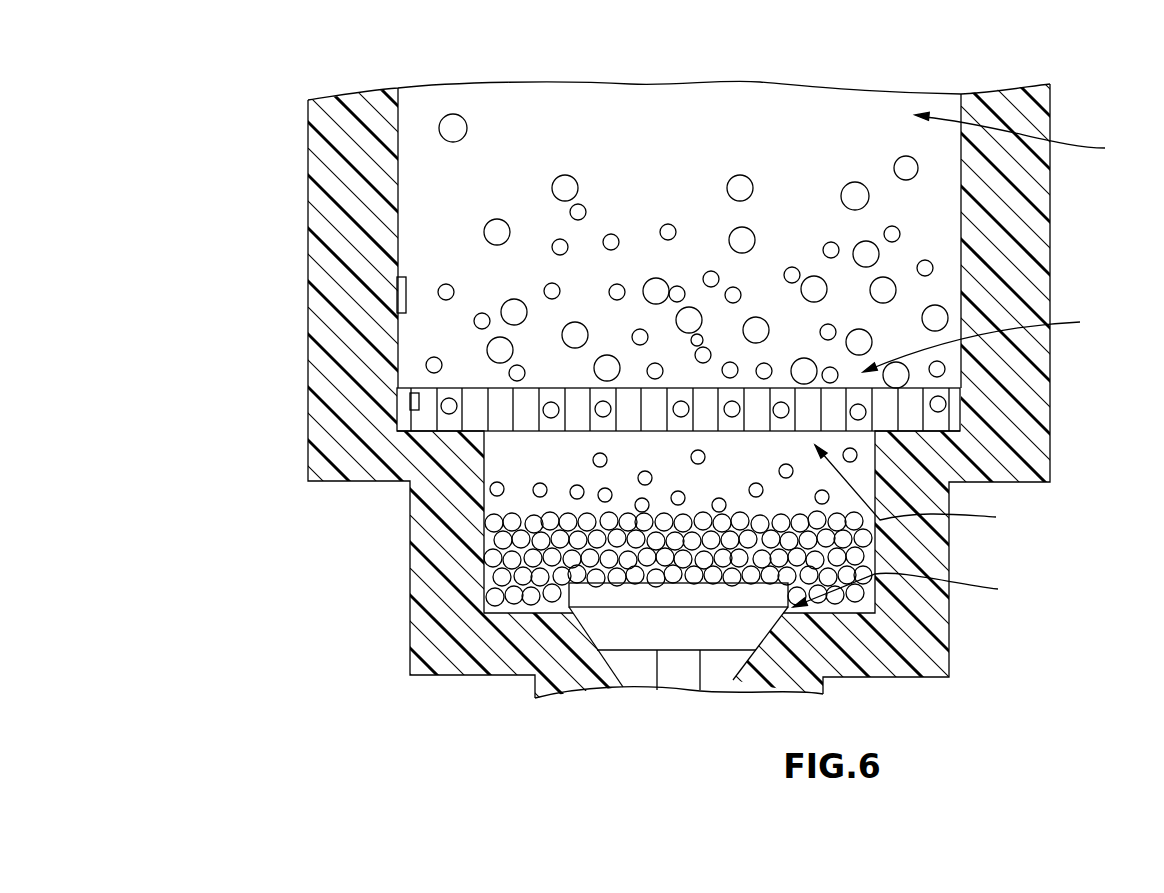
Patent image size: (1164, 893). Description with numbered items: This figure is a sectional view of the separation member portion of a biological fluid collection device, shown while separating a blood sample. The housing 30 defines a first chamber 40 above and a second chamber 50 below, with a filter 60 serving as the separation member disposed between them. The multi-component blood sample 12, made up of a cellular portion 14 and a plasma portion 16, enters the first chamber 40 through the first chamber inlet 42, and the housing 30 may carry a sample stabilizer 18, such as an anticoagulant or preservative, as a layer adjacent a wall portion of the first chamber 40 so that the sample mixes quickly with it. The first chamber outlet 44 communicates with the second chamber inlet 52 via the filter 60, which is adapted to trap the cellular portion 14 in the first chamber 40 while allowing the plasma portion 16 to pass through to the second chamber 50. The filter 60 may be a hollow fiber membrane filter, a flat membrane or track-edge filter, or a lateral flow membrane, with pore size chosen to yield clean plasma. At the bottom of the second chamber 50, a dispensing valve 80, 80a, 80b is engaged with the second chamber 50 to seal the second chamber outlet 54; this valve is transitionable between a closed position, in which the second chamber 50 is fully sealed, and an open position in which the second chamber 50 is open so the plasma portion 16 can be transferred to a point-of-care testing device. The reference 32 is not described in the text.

The multi-component blood sample 12 is at (431, 82).
The cellular portion 14 is at (452, 118).
The plasma portion 16 is at (692, 527).
The sample stabilizer 18 is at (407, 413).
The housing 30 is at (330, 213).
The separator assembly 32 is at (653, 446).
The first chamber 40 is at (940, 228).
The first chamber inlet 42 is at (1024, 136).
The first chamber outlet 44 is at (986, 340).
The second chamber 50 is at (850, 500).
The second chamber inlet 52 is at (921, 487).
The second chamber outlet 54 is at (910, 590).
The filter 60 is at (410, 403).
The dispensing valve 80 is at (679, 667).
The dispensing valve 80a is at (679, 667).
The dispensing valve 80b is at (633, 625).